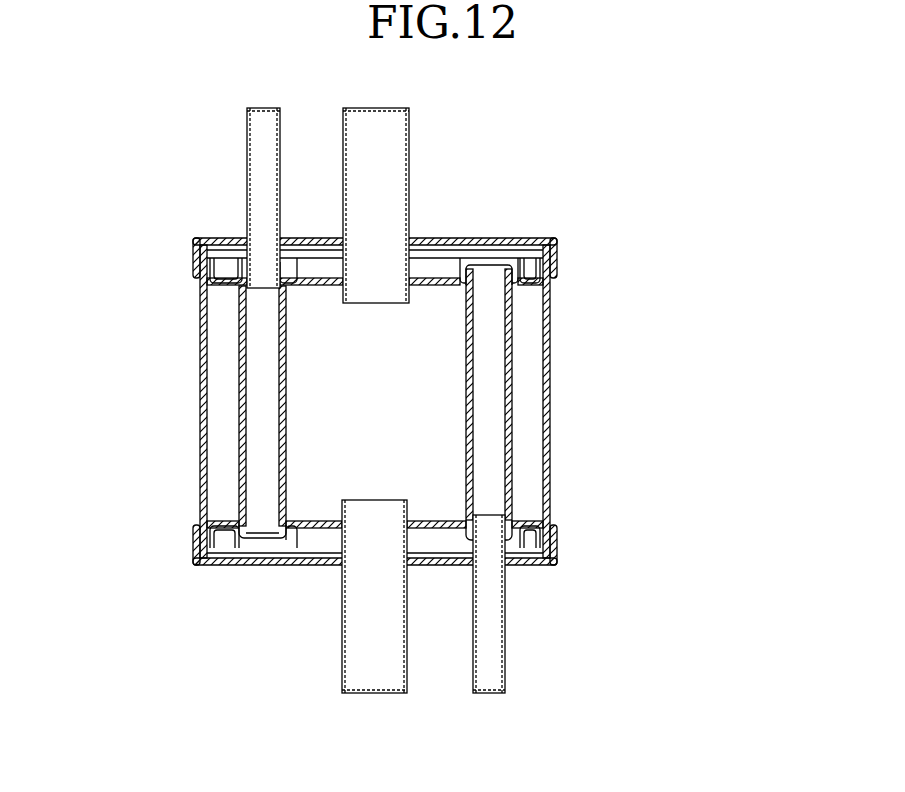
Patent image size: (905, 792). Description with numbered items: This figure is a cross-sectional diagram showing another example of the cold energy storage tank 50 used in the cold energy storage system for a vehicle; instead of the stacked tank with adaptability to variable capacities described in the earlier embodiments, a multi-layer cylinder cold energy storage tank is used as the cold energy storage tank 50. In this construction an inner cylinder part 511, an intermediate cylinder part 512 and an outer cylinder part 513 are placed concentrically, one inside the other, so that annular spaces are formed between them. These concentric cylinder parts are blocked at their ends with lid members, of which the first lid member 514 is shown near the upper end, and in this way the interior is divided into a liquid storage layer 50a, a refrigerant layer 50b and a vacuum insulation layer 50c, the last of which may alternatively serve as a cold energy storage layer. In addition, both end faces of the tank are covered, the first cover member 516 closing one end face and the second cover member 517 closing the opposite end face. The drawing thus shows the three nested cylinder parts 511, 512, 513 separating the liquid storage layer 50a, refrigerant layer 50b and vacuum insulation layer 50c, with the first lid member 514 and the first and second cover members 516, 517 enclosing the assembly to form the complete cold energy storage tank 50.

The cold energy storage tank 50 is at (158, 145).
The liquid storage layer 50a is at (315, 480).
The refrigerant layer 50b is at (488, 283).
The vacuum insulation layer 50c is at (221, 492).
The inner cylinder part 511 is at (473, 357).
The intermediate cylinder part 512 is at (510, 387).
The outer cylinder part 513 is at (550, 435).
The first lid member 514 is at (315, 283).
The first cover member 516 is at (530, 235).
The second cover member 517 is at (533, 565).